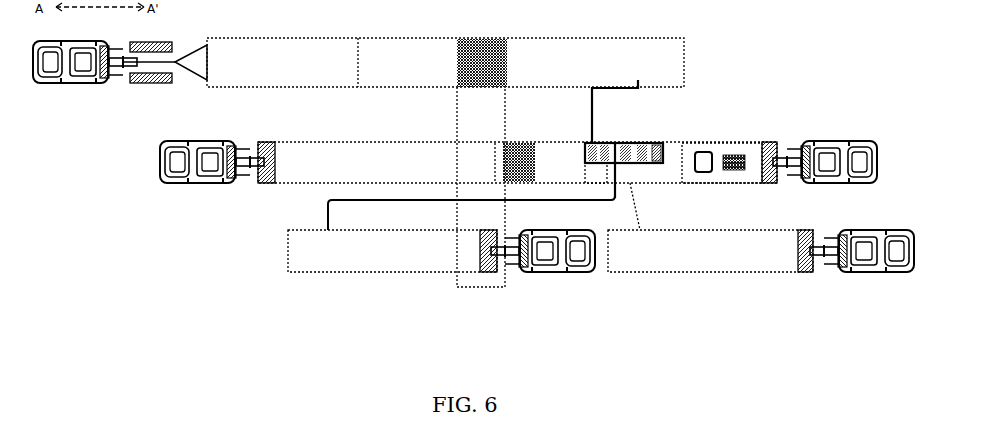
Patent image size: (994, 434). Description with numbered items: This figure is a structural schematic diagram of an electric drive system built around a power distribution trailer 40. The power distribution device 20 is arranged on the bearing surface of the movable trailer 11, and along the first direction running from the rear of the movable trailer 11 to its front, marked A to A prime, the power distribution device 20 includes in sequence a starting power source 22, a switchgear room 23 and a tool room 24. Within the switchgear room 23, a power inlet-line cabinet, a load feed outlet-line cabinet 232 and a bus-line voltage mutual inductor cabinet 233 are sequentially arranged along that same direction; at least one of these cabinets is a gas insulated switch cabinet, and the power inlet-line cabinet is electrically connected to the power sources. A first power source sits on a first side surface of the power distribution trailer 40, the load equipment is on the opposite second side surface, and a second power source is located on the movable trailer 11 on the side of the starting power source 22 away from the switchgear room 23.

The movable trailer 11 is at (197, 167).
The starting power source 22 is at (537, 163).
The load feed outlet-line cabinet 232 is at (621, 143).
The bus-line voltage mutual inductor cabinet 233 is at (655, 143).
The switchgear room 23 is at (668, 152).
The power distribution device 20 is at (717, 143).
The tool room 24 is at (745, 150).
The power distribution trailer 40 is at (530, 323).